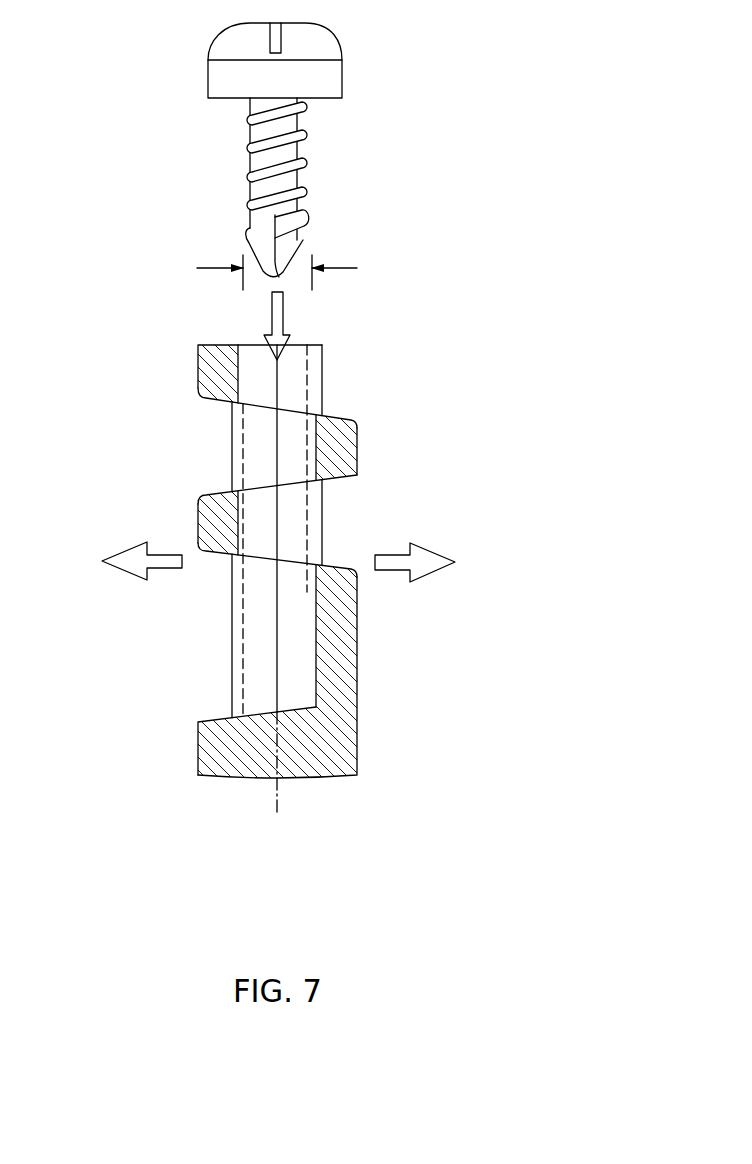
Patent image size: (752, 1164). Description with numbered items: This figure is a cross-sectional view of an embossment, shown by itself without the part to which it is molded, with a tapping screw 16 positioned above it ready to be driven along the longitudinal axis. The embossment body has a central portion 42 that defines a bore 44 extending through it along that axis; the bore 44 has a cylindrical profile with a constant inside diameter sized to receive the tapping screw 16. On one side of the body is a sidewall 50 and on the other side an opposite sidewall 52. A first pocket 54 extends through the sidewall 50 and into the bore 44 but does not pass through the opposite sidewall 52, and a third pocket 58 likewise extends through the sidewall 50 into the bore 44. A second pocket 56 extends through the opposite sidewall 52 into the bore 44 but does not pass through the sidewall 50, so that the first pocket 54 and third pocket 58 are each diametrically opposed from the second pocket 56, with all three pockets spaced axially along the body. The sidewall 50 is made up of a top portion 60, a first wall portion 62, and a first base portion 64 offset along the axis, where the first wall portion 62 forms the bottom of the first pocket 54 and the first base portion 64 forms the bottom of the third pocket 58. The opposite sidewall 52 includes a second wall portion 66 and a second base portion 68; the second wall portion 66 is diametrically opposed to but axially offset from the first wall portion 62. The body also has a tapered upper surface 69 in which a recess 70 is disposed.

The tapping screw 16 is at (353, 78).
The central portion 42 is at (297, 348).
The bore 44 is at (267, 676).
The sidewall 50 is at (269, 562).
The opposite sidewall 52 is at (360, 715).
The first pocket 54 is at (232, 435).
The second pocket 56 is at (332, 516).
The third pocket 58 is at (222, 620).
The top portion 60 is at (193, 373).
The first wall portion 62 is at (225, 520).
The first base portion 64 is at (233, 752).
The second wall portion 66 is at (332, 462).
The second base portion 68 is at (330, 665).
The tapered upper surface 69 is at (342, 408).
The recess 70 is at (300, 378).